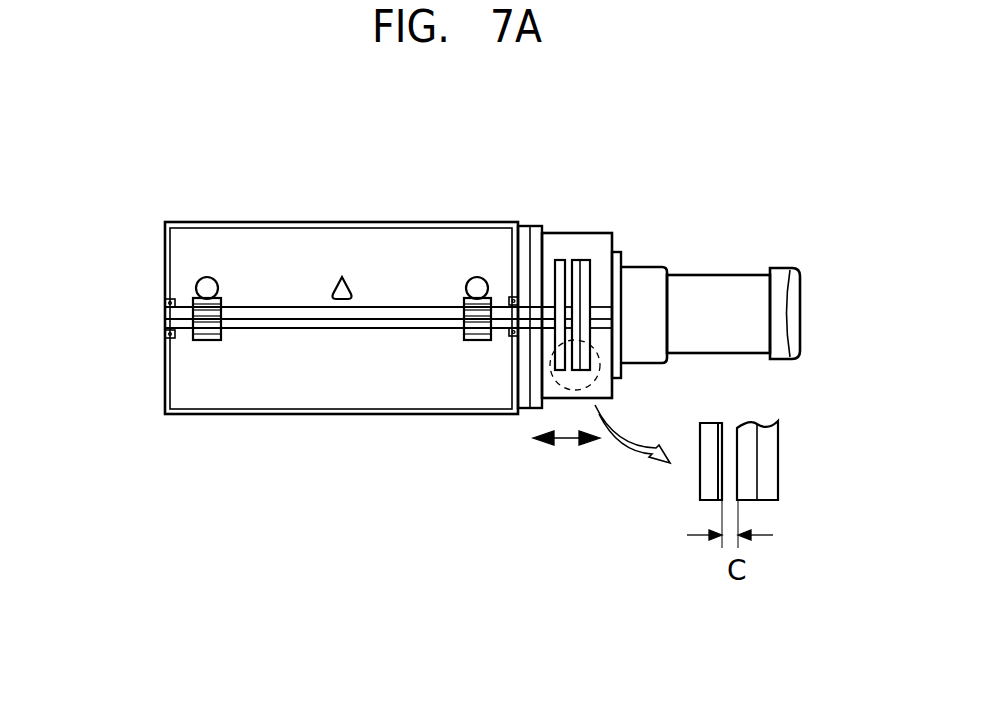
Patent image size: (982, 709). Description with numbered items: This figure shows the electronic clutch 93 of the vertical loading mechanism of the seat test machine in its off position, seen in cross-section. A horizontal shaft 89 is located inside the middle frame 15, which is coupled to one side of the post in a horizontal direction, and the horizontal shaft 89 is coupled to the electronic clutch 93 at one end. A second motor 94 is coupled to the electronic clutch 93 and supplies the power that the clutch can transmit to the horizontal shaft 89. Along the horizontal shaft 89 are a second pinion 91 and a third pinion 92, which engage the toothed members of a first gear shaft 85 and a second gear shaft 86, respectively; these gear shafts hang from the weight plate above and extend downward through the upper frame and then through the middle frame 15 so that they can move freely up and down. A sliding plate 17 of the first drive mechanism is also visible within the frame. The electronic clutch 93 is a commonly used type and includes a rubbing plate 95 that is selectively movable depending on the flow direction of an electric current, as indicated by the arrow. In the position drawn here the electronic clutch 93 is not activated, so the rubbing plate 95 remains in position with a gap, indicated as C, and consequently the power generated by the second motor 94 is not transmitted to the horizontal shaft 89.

The middle frame 15 is at (166, 374).
The sliding plate 17 is at (341, 276).
The first gear shaft 85 is at (205, 277).
The second gear shaft 86 is at (476, 277).
The horizontal shaft 89 is at (358, 319).
The second pinion 91 is at (207, 341).
The third pinion 92 is at (479, 341).
The electronic clutch 93 is at (624, 226).
The second motor 94 is at (724, 284).
The rubbing plate 95 is at (577, 260).